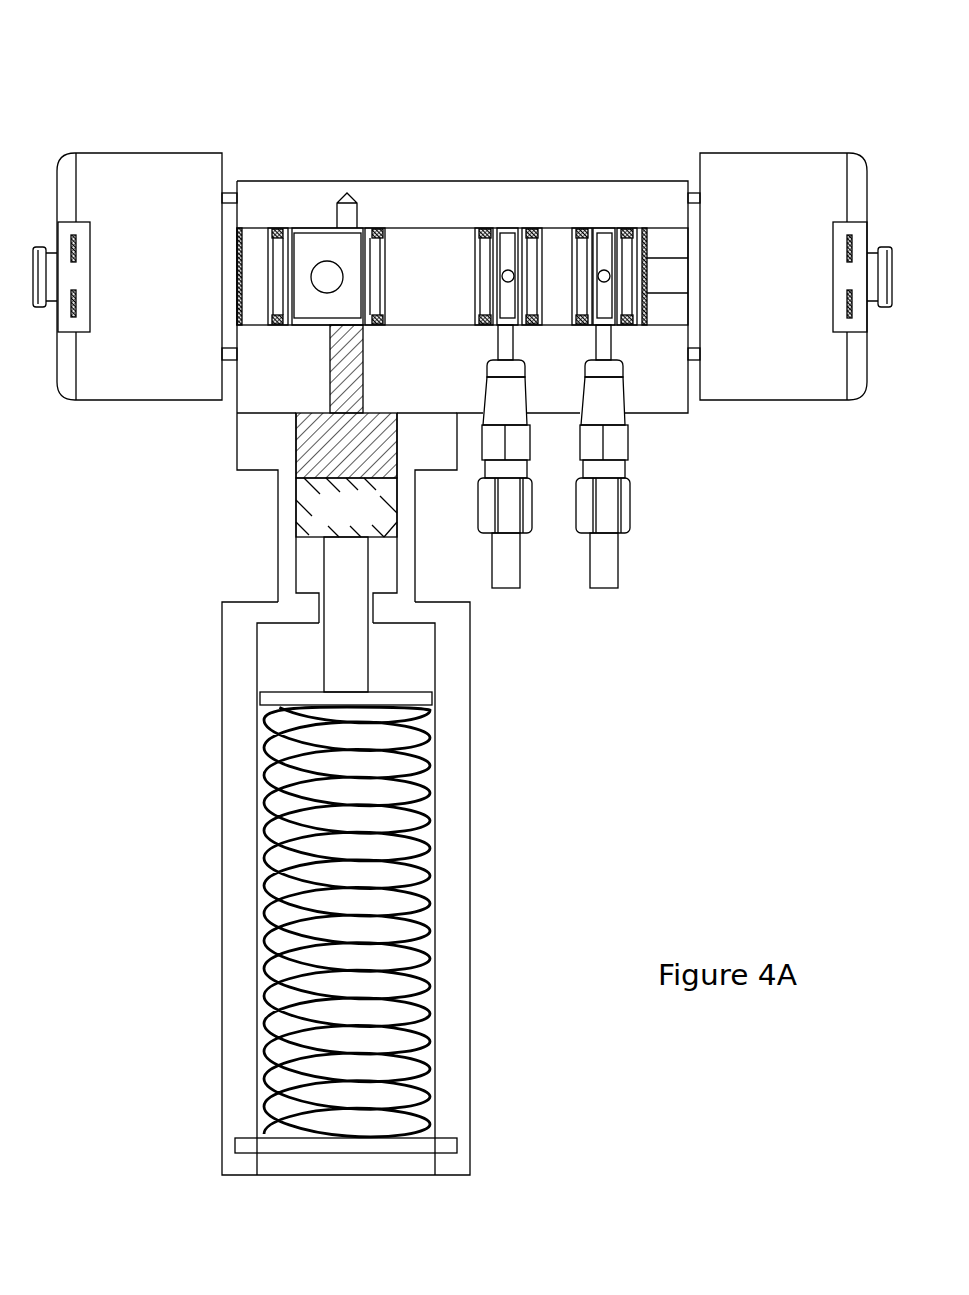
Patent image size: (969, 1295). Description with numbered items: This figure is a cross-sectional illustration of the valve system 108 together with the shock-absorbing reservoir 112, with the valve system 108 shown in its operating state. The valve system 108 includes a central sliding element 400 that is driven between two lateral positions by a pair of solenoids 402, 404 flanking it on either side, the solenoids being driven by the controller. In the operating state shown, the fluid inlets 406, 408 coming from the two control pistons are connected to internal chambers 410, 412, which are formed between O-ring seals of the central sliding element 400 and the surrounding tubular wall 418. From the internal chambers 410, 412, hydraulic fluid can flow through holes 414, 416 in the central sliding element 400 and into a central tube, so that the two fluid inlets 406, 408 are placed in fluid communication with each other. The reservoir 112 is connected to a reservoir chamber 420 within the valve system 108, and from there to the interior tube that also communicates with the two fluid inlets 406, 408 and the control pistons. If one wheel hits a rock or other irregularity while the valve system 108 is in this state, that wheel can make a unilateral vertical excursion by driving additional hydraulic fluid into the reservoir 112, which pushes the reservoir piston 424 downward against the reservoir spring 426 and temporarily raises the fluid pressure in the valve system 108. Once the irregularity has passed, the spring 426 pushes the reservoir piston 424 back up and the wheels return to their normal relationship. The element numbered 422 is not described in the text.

The valve system 108 is at (617, 84).
The shock-absorbing reservoir 112 is at (222, 690).
The central sliding element 400 is at (410, 228).
The solenoid 402 is at (148, 153).
The solenoid 404 is at (772, 153).
The fluid inlet 406 is at (520, 553).
The fluid inlet 408 is at (617, 553).
The internal chamber 410 is at (510, 232).
The internal chamber 412 is at (605, 232).
The hole 414 is at (505, 283).
The hole 416 is at (600, 283).
The tubular wall 418 is at (667, 228).
The reservoir chamber 420 is at (317, 290).
The main piston 422 is at (306, 232).
The reservoir piston 424 is at (367, 524).
The reservoir spring 426 is at (265, 1063).